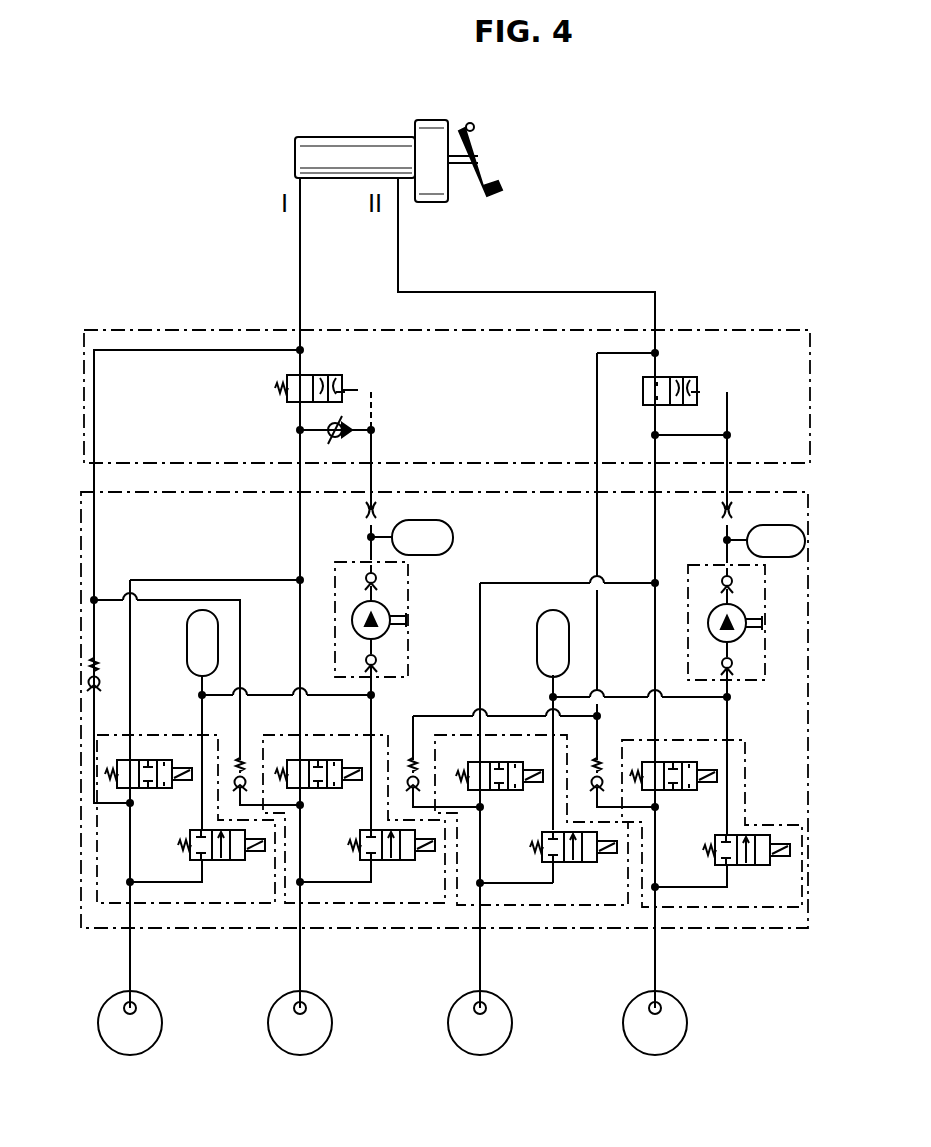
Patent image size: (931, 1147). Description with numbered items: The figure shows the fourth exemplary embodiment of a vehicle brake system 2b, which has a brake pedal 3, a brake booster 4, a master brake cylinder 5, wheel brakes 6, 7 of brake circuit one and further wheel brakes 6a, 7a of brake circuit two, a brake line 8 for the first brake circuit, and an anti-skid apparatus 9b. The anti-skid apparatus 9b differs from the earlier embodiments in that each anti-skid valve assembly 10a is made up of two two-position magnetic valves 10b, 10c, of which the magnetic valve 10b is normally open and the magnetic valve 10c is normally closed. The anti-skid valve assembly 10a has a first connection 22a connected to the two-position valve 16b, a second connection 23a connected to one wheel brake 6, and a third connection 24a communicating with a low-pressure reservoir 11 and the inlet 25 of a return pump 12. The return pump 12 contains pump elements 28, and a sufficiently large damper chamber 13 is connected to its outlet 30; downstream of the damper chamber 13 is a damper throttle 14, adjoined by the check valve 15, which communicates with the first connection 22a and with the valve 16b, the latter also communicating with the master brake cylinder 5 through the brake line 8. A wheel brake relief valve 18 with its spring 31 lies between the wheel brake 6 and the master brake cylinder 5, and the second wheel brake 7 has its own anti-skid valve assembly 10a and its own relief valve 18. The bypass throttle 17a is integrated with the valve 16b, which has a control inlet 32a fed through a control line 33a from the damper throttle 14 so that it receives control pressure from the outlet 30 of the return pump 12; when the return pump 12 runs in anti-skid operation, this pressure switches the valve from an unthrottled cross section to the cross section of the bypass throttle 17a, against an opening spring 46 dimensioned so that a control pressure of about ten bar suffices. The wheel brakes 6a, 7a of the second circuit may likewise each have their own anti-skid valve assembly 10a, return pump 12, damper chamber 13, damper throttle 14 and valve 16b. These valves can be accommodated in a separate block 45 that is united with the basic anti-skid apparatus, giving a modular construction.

The vehicle brake system 2b is at (262, 264).
The brake pedal 3 is at (504, 187).
The brake booster 4 is at (426, 128).
The master brake cylinder 5 is at (337, 136).
The wheel brake 6 is at (136, 1008).
The wheel brake 7 is at (306, 1008).
The wheel brake 6a is at (486, 1008).
The wheel brake 7a is at (661, 1008).
The brake line 8 is at (300, 304).
The anti-skid apparatus 9b is at (110, 932).
The anti-skid valve assembly 10a is at (200, 910).
The 2/2-way magnetic valve 10b is at (146, 788).
The 2/2-way magnetic valve 10c is at (222, 860).
The low-pressure reservoir 11 is at (186, 630).
The return pump 12 is at (334, 574).
The damper chamber 13 is at (588, 538).
The damper throttle 14 is at (360, 511).
The check valve 15 is at (336, 436).
The 2/2-way valve 16b is at (286, 384).
The bypass throttle 17a is at (321, 378).
The wheel brake relief valve 18 is at (94, 694).
The first connection 22a is at (198, 735).
The second connection 23a is at (131, 930).
The third connection 24a is at (201, 695).
The inlet 25 is at (373, 696).
The pump elements 28 is at (387, 610).
The outlet 30 is at (368, 559).
The spring 31 is at (96, 664).
The control inlet 32a is at (346, 384).
The control line 33a is at (372, 408).
The separate block 45 is at (173, 328).
The opening spring 46 is at (276, 398).